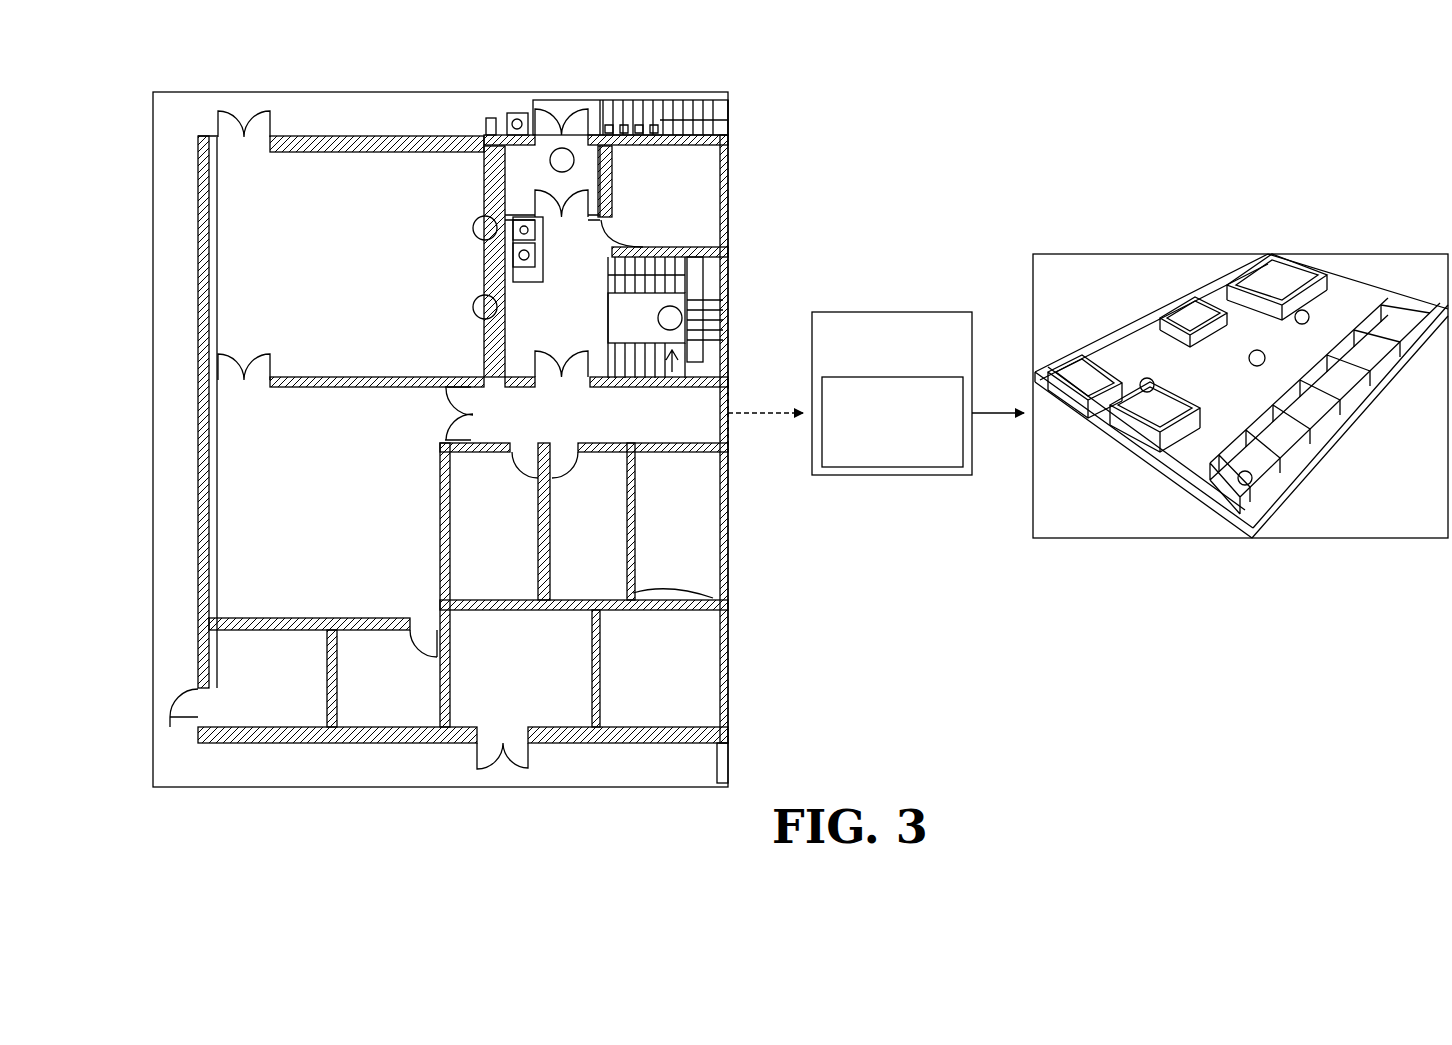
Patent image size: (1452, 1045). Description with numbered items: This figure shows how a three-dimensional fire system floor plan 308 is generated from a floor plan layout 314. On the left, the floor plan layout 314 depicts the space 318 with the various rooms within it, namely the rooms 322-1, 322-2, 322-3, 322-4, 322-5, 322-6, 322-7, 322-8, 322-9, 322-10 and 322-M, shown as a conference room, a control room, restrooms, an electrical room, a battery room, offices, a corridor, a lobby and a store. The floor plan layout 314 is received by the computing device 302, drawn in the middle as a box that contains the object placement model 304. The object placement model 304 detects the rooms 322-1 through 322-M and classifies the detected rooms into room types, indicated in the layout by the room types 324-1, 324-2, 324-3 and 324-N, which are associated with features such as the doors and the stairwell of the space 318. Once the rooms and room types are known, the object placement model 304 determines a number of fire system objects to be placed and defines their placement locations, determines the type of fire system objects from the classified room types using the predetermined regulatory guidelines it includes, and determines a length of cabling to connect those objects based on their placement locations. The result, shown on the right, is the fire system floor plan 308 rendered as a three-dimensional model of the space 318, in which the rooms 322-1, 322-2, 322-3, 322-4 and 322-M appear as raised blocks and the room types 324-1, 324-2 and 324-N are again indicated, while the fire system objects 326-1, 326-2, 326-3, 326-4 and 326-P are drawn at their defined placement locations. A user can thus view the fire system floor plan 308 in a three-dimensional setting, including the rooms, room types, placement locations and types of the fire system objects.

The computing device 302 is at (890, 312).
The object placement model 304 is at (890, 475).
The fire system floor plan 308 is at (1033, 270).
The floor plan layout 314 is at (153, 122).
The space 318 is at (234, 88).
The room 322-1 is at (248, 210).
The room 322-2 is at (248, 435).
The room 322-3 is at (237, 685).
The room 322-4 is at (380, 713).
The room 322-5 is at (508, 715).
The room 322-6 is at (630, 715).
The room 322-7 is at (527, 583).
The room 322-8 is at (610, 572).
The room 322-9 is at (708, 400).
The room 322-10 is at (650, 223).
The room 322-M is at (705, 165).
The room type 324-1 is at (290, 380).
The room type 324-2 is at (233, 623).
The room type 324-3 is at (690, 605).
The room type 324-N is at (705, 248).
The fire system object 326-1 is at (1183, 318).
The fire system object 326-2 is at (1147, 392).
The fire system object 326-3 is at (1245, 486).
The fire system object 326-4 is at (1302, 310).
The fire system object 326-P is at (1257, 350).